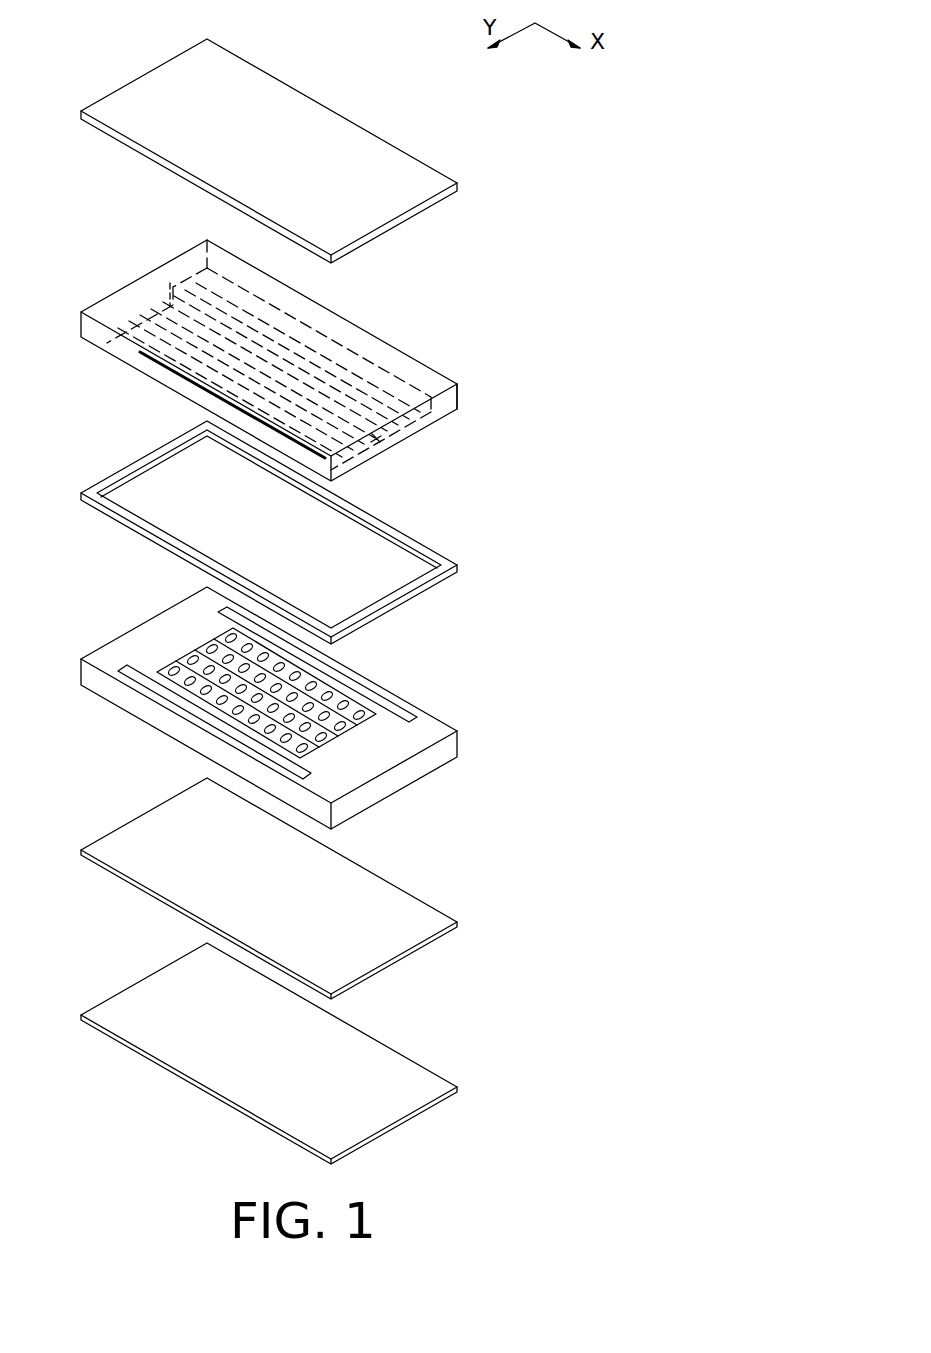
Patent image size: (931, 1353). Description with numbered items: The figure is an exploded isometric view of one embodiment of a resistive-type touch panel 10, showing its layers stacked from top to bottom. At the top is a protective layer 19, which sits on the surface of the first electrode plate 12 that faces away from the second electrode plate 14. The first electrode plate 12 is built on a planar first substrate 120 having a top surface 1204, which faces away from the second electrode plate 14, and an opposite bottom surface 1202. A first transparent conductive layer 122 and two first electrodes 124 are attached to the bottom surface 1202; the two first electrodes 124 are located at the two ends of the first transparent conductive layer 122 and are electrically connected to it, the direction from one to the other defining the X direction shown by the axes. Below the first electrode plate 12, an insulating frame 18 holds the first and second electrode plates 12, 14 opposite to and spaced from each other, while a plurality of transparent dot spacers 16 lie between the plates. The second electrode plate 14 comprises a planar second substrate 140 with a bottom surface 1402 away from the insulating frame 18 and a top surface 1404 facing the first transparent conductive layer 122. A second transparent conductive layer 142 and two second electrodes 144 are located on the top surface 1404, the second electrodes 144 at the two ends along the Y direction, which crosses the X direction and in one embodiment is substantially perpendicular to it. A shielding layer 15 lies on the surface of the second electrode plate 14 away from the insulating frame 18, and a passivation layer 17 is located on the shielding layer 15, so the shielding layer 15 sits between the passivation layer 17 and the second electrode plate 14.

The resistive-type touch panel 10 is at (106, 21).
The protective layer 19 is at (330, 133).
The first electrode plate 12 is at (306, 356).
The first transparent conductive layer 122 is at (260, 335).
The first electrodes 124 is at (170, 290).
The top surface 1204 is at (420, 373).
The first substrate 120 is at (452, 392).
The bottom surface 1202 is at (438, 421).
The insulating frame 18 is at (407, 538).
The second electrode plate 14 is at (316, 719).
The top surface 1404 is at (430, 728).
The bottom surface 1402 is at (428, 777).
The second substrate 140 is at (93, 687).
The second transparent conductive layer 142 is at (192, 648).
The second electrodes 144 is at (347, 682).
The transparent dot spacers 16 is at (365, 712).
The shielding layer 15 is at (400, 907).
The passivation layer 17 is at (400, 1073).